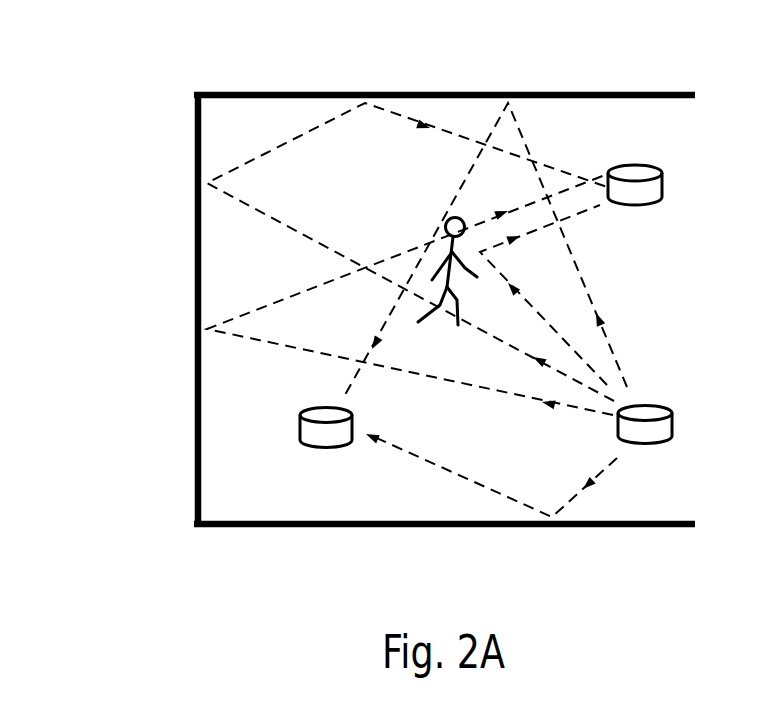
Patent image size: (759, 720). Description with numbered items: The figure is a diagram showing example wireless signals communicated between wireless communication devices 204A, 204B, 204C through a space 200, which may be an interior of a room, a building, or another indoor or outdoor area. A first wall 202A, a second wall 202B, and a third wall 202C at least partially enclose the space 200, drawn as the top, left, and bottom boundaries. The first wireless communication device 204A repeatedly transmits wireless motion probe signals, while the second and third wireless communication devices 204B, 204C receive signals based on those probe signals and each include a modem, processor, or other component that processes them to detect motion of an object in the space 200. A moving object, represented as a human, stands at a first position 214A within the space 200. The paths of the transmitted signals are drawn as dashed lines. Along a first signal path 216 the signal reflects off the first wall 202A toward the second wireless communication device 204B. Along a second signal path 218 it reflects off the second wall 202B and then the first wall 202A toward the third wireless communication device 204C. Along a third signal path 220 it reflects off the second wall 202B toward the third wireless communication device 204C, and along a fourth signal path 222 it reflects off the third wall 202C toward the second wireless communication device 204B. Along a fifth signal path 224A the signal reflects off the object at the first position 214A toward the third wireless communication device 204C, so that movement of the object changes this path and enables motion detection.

The space 200 is at (406, 304).
The first wall 202A is at (450, 91).
The second wall 202B is at (194, 140).
The third wall 202C is at (672, 529).
The first wireless communication device 204A is at (647, 405).
The second wireless communication device 204B is at (353, 425).
The third wireless communication device 204C is at (663, 183).
The first position 214A is at (442, 224).
The first signal path 216 is at (603, 330).
The second signal path 218 is at (548, 368).
The third signal path 220 is at (568, 407).
The fourth signal path 222 is at (586, 480).
The fifth signal path 224A is at (526, 298).